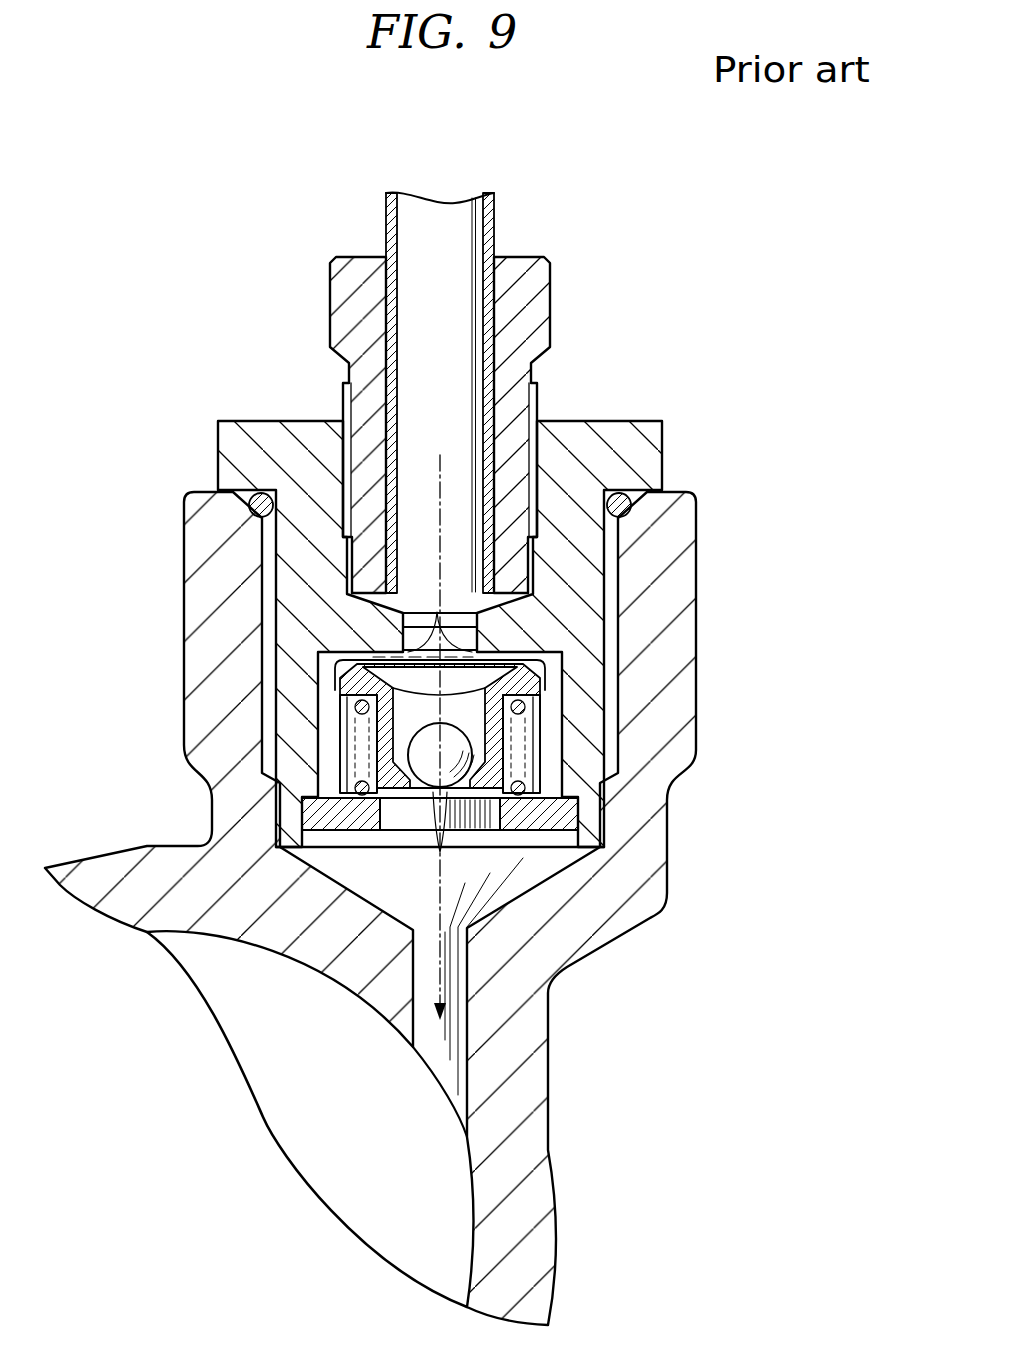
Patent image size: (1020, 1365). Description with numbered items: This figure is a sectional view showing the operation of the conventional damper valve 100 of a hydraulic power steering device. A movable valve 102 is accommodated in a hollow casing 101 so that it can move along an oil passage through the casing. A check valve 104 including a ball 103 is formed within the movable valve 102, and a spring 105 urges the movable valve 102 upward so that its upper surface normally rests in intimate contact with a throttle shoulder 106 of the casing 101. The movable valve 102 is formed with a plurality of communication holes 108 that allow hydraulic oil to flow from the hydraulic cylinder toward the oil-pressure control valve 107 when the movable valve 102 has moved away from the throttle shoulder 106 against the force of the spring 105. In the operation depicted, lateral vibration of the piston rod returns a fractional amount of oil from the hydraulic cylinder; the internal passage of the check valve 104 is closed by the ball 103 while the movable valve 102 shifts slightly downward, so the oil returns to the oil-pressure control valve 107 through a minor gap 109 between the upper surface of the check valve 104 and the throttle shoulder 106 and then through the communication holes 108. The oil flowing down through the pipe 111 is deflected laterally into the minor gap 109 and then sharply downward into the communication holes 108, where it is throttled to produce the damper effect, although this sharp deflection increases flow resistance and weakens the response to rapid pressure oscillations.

The damper valve 100 is at (645, 305).
The casing 101 is at (697, 548).
The movable valve 102 is at (553, 732).
The ball 103 is at (443, 765).
The check valve 104 is at (383, 752).
The spring 105 is at (520, 787).
The throttle shoulder 106 is at (380, 638).
The oil-pressure control valve 107 is at (327, 1163).
The communication holes 108 is at (342, 685).
The minor gap 109 is at (540, 652).
The pipe 111 is at (460, 225).